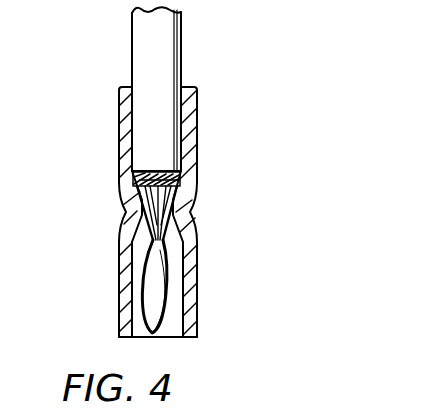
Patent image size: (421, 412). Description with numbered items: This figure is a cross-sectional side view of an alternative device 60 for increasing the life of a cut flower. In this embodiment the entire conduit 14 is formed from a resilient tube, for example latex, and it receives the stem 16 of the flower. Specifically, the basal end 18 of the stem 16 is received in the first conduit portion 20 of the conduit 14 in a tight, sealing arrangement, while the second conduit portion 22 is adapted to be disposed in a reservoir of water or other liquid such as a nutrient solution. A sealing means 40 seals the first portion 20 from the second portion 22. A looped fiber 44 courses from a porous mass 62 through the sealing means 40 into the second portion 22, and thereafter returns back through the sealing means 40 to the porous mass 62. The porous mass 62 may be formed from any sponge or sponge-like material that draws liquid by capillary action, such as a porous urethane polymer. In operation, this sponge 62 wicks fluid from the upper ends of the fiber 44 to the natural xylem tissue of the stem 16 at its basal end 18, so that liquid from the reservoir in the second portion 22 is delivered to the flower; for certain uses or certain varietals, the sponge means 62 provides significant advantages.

The conduit 14 is at (200, 285).
The stem 16 is at (135, 19).
The basal end 18 is at (155, 139).
The first conduit portion 20 is at (121, 121).
The second conduit portion 22 is at (120, 313).
The sealing means 40 is at (143, 208).
The looped fiber 44 is at (162, 260).
The alternative device 60 is at (220, 197).
The porous mass 62 is at (183, 176).